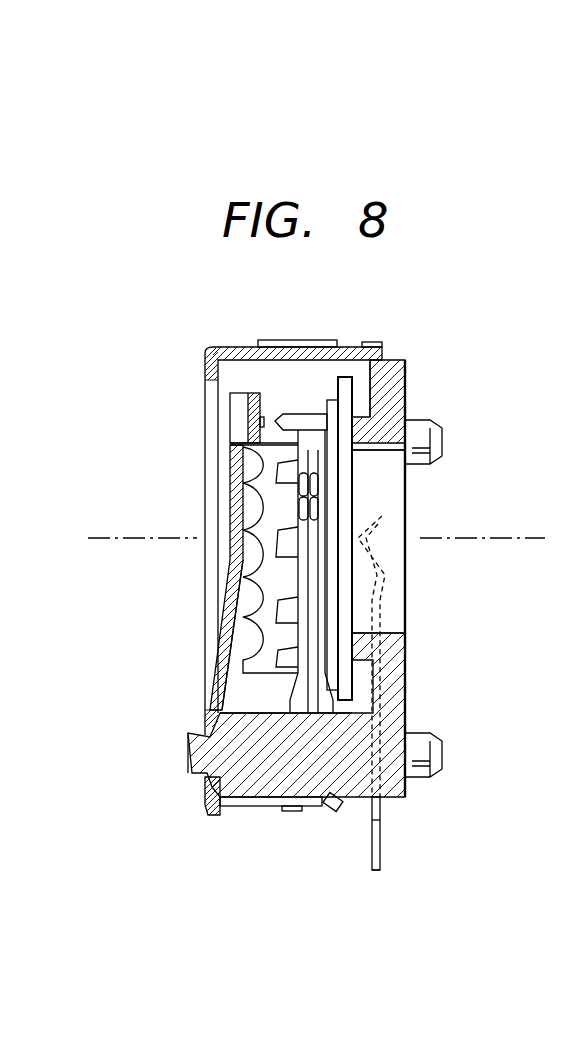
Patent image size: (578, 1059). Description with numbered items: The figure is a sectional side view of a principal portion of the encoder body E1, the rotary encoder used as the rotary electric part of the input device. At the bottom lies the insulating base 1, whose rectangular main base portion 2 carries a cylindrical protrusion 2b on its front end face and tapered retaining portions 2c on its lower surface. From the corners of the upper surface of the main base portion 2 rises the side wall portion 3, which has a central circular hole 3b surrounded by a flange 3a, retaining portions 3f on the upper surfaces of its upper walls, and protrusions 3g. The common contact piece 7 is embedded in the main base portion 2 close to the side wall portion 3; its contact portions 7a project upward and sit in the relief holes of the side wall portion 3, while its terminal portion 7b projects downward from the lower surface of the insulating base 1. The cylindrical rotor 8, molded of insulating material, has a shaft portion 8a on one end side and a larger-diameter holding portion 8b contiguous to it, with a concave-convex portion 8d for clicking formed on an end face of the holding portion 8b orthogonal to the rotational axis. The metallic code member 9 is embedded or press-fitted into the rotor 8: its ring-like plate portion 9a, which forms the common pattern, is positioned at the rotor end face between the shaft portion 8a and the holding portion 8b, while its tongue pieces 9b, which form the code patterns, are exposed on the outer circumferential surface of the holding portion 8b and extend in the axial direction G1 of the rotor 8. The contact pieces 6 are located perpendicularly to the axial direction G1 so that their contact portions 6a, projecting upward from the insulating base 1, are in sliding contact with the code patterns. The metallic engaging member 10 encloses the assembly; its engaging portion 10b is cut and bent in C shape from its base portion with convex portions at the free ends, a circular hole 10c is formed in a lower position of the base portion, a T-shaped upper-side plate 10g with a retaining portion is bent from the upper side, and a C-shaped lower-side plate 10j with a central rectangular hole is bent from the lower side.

The insulating base 1 is at (410, 370).
The main base portion 2 is at (352, 796).
The cylindrical protrusion 2b is at (188, 760).
The retaining portions 2c is at (283, 812).
The side wall portion 3 is at (389, 394).
The flange 3a is at (362, 418).
The central circular hole 3b is at (381, 446).
The retaining portions 3f is at (341, 376).
The protrusions 3g is at (441, 428).
The contact pieces 6 is at (287, 689).
The contact portion 6a is at (280, 540).
The common contact piece 7 is at (386, 870).
The contact portions 7a is at (408, 566).
The terminal portion 7b is at (374, 872).
The rotor 8 is at (408, 624).
The shaft portion 8a is at (393, 612).
The holding portion 8b is at (287, 443).
The concave-convex portion 8d is at (247, 574).
The code member 9 is at (356, 485).
The ring-like plate portion 9a is at (298, 416).
The tongue pieces 9b is at (283, 406).
The engaging member 10 is at (203, 352).
The engaging portion 10b is at (230, 475).
The circular hole 10c is at (192, 776).
The upper-side plate 10g is at (372, 350).
The lower-side plate 10j is at (240, 806).
The encoder body E1 is at (413, 796).
The axial direction G1 is at (332, 538).